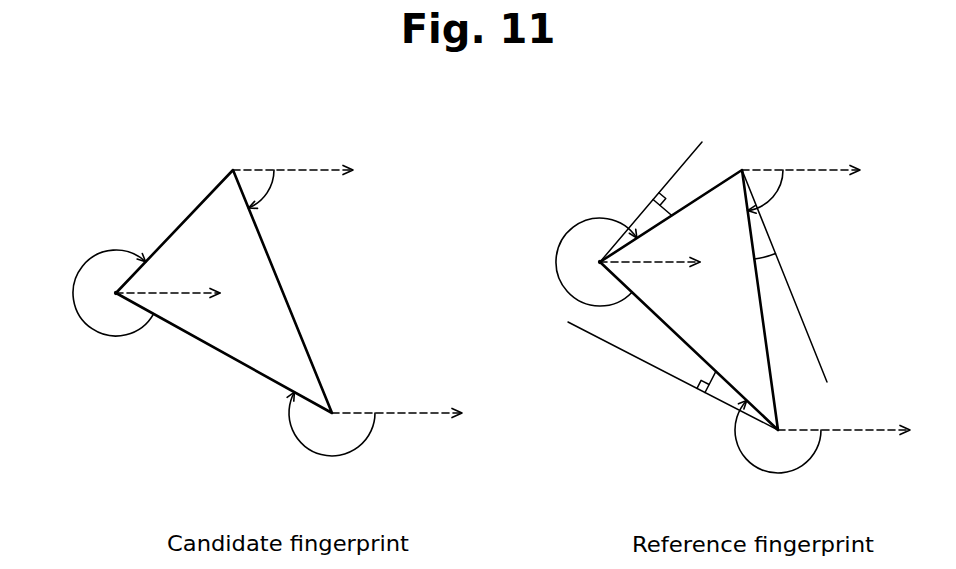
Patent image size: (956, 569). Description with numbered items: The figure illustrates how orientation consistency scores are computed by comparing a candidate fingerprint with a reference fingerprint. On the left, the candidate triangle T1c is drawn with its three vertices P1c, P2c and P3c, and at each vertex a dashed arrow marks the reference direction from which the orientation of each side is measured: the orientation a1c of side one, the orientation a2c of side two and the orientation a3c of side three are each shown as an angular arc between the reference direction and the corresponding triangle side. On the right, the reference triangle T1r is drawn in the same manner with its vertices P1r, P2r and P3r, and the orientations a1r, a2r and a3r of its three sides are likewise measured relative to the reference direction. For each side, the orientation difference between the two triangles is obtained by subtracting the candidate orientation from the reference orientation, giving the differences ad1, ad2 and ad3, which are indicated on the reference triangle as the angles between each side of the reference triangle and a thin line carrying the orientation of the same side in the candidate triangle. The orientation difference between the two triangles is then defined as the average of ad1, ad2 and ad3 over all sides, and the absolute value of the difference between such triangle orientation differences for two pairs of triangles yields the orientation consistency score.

The first minutia point of candidate fingerprint P1c is at (282, 148).
The second minutia point of candidate fingerprint P2c is at (397, 433).
The third minutia point of candidate fingerprint P3c is at (77, 301).
The candidate triangle T1c is at (184, 293).
The orientation of side one in the candidate triangle a1c is at (276, 192).
The orientation of side two in the candidate triangle a2c is at (331, 444).
The orientation of side three in the candidate triangle a3c is at (113, 273).
The first minutia point of reference fingerprint P1r is at (790, 148).
The second minutia point of reference fingerprint P2r is at (844, 451).
The third minutia point of reference fingerprint P3r is at (559, 262).
The reference triangle T1r is at (668, 256).
The orientation of side one in the reference triangle a1r is at (779, 193).
The orientation of side two in the reference triangle a2r is at (773, 452).
The orientation of side three in the reference triangle a3r is at (596, 243).
The orientation difference of side one ad1 is at (776, 264).
The orientation difference of side two ad2 is at (699, 379).
The orientation difference of side three ad3 is at (666, 197).